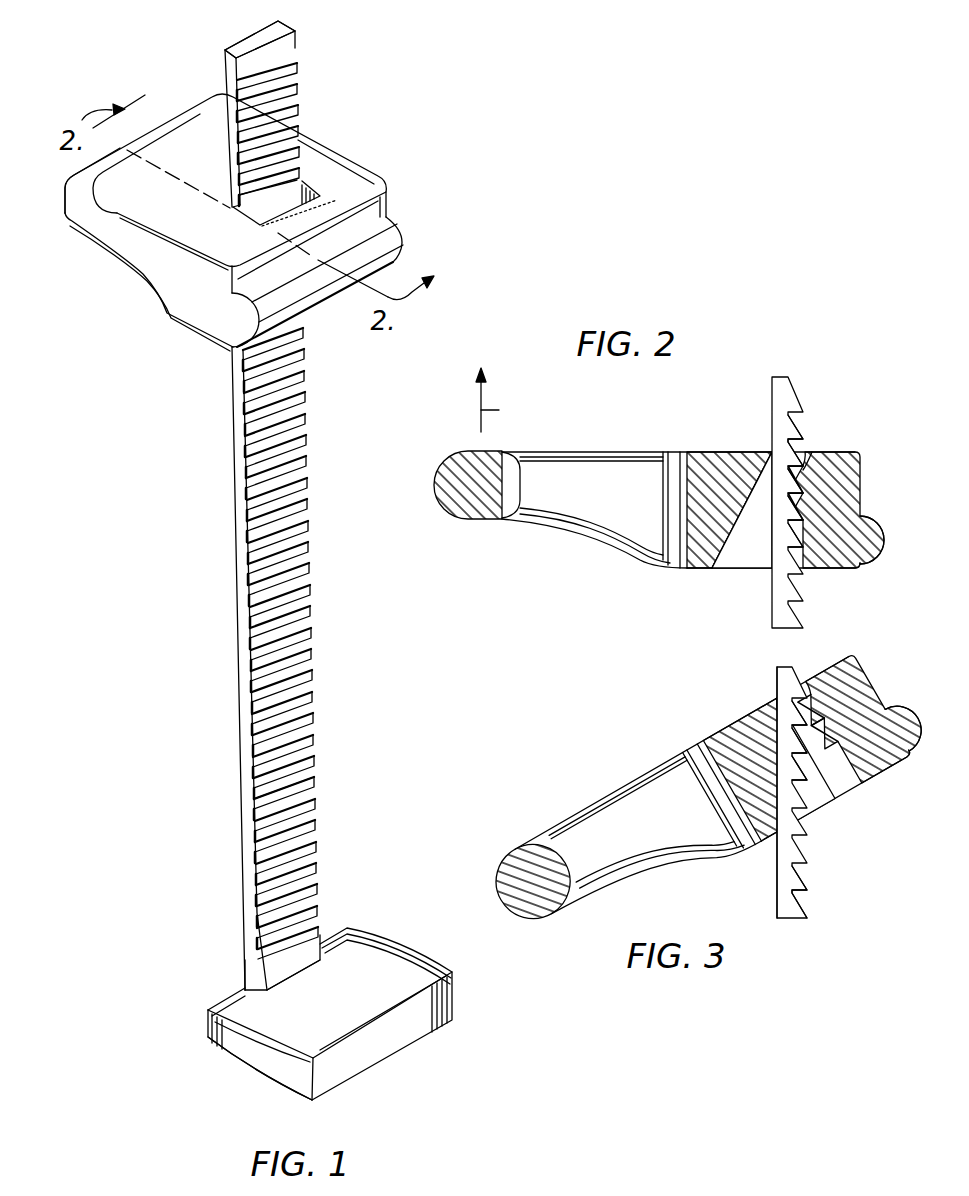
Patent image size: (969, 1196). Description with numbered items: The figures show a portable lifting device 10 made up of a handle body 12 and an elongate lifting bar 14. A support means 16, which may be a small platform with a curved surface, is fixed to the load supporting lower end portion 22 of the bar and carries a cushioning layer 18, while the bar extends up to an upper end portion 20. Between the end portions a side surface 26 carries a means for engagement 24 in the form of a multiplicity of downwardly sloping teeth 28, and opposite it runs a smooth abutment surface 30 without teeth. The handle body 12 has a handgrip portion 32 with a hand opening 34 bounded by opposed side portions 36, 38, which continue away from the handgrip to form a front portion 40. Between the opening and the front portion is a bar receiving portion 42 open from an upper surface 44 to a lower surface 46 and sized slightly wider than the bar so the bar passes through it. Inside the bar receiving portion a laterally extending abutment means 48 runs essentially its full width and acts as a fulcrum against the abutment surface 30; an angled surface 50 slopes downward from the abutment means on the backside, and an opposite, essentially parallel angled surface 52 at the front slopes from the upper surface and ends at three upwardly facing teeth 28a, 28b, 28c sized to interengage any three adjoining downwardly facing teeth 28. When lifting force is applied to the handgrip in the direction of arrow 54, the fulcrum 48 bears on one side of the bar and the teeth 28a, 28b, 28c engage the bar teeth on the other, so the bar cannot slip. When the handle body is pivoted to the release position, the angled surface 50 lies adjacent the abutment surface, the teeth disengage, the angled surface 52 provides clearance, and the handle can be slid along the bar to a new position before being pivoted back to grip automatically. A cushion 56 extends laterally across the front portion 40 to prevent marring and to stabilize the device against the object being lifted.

In FIG. 1, the portable lifting device 10 is at (410, 92).
In FIG. 1, the handle body 12 is at (180, 277).
In FIG. 1, the elongate lifting bar 14 is at (243, 727).
In FIG. 3, the elongate lifting bar 14 is at (768, 886).
In FIG. 1, the support means 16 is at (388, 1043).
In FIG. 1, the cushioning layer 18 is at (267, 1062).
In FIG. 1, the upper end portion 20 is at (297, 38).
In FIG. 1, the lower end portion 22 is at (250, 973).
In FIG. 1, the means for engagement 24 is at (302, 770).
In FIG. 1, the side surface 26 is at (300, 965).
In FIG. 1, the teeth 28 is at (298, 70).
In FIG. 2, the teeth 28 is at (803, 407).
In FIG. 3, the teeth 28 is at (810, 893).
In FIG. 2, the upwardly facing tooth 28a is at (794, 502).
In FIG. 3, the upwardly facing tooth 28a is at (807, 762).
In FIG. 2, the upwardly facing tooth 28b is at (793, 538).
In FIG. 3, the upwardly facing tooth 28b is at (813, 754).
In FIG. 2, the upwardly facing tooth 28c is at (795, 566).
In FIG. 3, the upwardly facing tooth 28c is at (823, 748).
In FIG. 2, the abutment surface 30 is at (771, 384).
In FIG. 3, the abutment surface 30 is at (775, 688).
In FIG. 1, the handgrip portion 32 is at (188, 108).
In FIG. 2, the handgrip portion 32 is at (440, 509).
In FIG. 3, the handgrip portion 32 is at (522, 918).
In FIG. 1, the hand opening 34 is at (146, 163).
In FIG. 2, the hand opening 34 is at (523, 470).
In FIG. 3, the hand opening 34 is at (685, 833).
In FIG. 1, the side portion 36 is at (107, 233).
In FIG. 1, the side portion 38 is at (310, 133).
In FIG. 1, the front portion 40 is at (380, 207).
In FIG. 2, the front portion 40 is at (862, 485).
In FIG. 3, the front portion 40 is at (858, 677).
In FIG. 1, the bar receiving portion 42 is at (308, 158).
In FIG. 2, the bar receiving portion 42 is at (810, 463).
In FIG. 1, the upper surface 44 is at (228, 235).
In FIG. 2, the upper surface 44 is at (710, 452).
In FIG. 3, the upper surface 44 is at (727, 728).
In FIG. 1, the lower surface 46 is at (195, 302).
In FIG. 2, the lower surface 46 is at (697, 572).
In FIG. 1, the abutment means 48 is at (225, 205).
In FIG. 2, the abutment means 48 is at (770, 447).
In FIG. 2, the angled surface 50 is at (715, 568).
In FIG. 3, the angled surface 50 is at (755, 815).
In FIG. 2, the angled surface 52 is at (812, 453).
In FIG. 3, the angled surface 52 is at (807, 672).
In FIG. 2, the arrow 54 is at (503, 400).
In FIG. 1, the cushion 56 is at (393, 240).
In FIG. 2, the cushion 56 is at (873, 541).
In FIG. 3, the cushion 56 is at (892, 708).